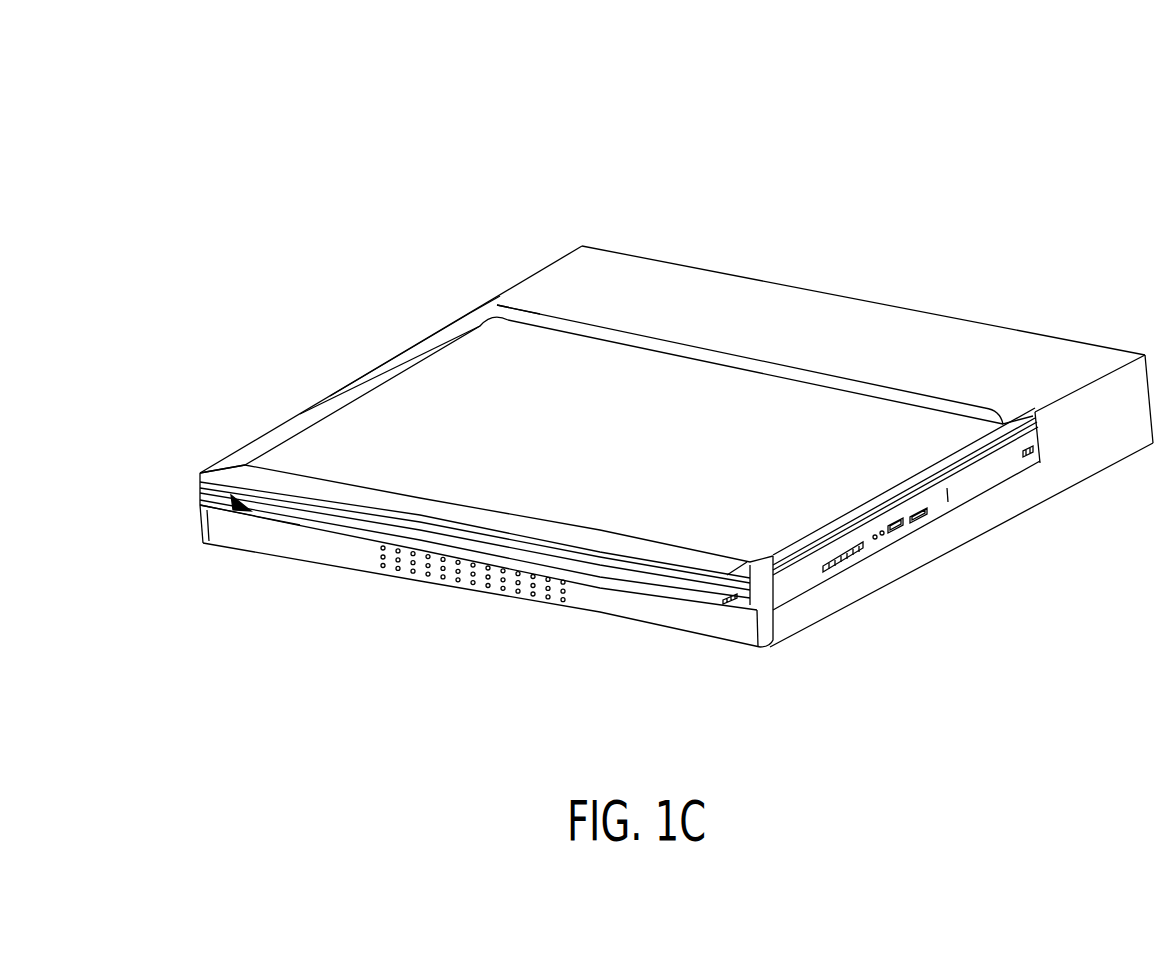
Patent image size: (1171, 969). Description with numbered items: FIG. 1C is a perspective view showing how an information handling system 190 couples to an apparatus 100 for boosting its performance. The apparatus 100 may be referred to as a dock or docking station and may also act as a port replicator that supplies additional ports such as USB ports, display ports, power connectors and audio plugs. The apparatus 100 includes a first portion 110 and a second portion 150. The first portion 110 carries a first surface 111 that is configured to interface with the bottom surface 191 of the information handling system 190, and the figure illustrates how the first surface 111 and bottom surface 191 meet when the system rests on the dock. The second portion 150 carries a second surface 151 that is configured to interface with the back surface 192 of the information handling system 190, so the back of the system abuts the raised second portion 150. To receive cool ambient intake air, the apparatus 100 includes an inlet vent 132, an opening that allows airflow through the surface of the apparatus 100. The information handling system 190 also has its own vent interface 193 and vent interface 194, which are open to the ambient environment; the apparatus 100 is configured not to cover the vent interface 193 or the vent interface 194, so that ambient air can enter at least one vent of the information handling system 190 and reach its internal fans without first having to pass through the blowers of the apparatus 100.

The apparatus 100 is at (860, 312).
The first portion 110 is at (1052, 528).
The first surface 111 is at (205, 471).
The inlet vent 132 is at (492, 592).
The second portion 150 is at (488, 126).
The second surface 151 is at (456, 306).
The information handling system 190 is at (343, 415).
The bottom surface 191 is at (264, 535).
The back surface 192 is at (478, 296).
The vent interface 193 is at (985, 478).
The vent interface 194 is at (368, 350).